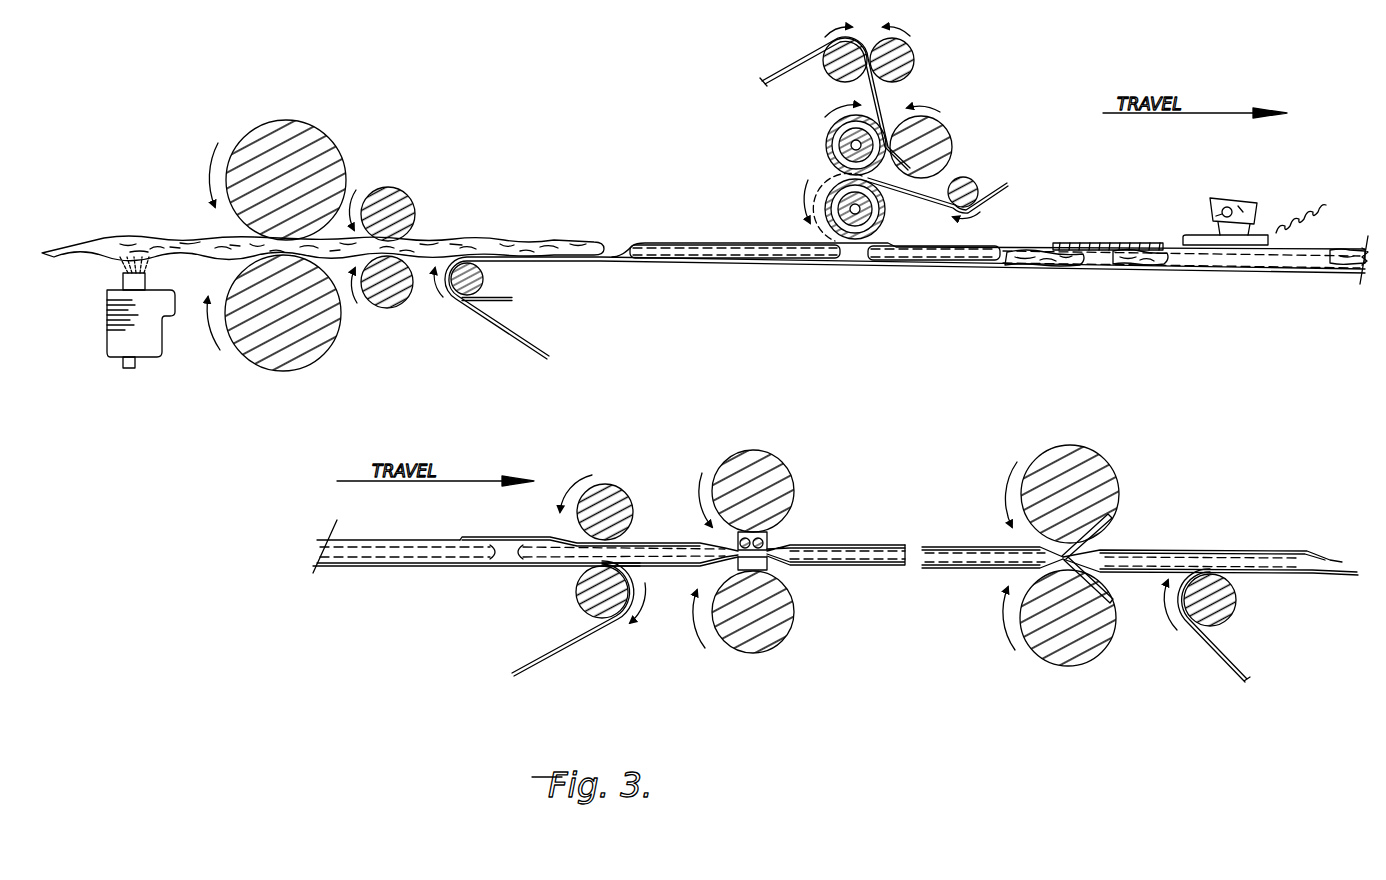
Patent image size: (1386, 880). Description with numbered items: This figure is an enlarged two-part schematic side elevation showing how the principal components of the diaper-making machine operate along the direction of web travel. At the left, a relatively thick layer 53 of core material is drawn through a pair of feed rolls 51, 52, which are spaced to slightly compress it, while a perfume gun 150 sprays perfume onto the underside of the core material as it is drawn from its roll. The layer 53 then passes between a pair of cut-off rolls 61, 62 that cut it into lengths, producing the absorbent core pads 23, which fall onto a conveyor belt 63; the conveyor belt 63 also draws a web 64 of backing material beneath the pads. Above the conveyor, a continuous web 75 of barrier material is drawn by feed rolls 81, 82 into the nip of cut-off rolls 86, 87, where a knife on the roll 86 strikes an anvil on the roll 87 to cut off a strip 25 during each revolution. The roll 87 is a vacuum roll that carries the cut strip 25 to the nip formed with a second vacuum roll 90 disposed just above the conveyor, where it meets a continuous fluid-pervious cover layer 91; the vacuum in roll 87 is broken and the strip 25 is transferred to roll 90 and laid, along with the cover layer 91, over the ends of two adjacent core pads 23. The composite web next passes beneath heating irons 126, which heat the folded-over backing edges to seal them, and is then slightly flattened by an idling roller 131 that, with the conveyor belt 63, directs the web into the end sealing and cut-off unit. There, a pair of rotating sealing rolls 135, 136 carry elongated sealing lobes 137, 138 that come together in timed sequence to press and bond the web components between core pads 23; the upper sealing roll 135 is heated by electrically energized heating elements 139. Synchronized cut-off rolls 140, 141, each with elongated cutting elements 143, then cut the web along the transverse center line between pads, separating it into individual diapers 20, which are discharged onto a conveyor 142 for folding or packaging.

The diaper 20 is at (1262, 540).
The core 23 is at (548, 248).
The plastic strip 25 is at (817, 227).
The feed roll 51 is at (307, 133).
The feed roll 52 is at (290, 370).
The layer of core material 53 is at (140, 238).
The cut-off roll 61 is at (397, 200).
The cut-off roll 62 is at (377, 307).
The conveyor belt 63 is at (620, 263).
The web of backing material 64 is at (520, 345).
The web 75 is at (773, 73).
The feed roll 81 is at (840, 70).
The feed roll 82 is at (918, 57).
The cut-off roll 86 is at (943, 137).
The cut-off roll 87 is at (827, 140).
The vacuum roll 90 is at (878, 217).
The cover layer 91 is at (997, 197).
The heating iron 126 is at (1185, 237).
The idling roller 131 is at (607, 493).
The upper sealing roll 135 is at (770, 463).
The sealing roll 136 is at (767, 648).
The sealing lobe 137 is at (738, 538).
The sealing lobe 138 is at (763, 563).
The heating elements 139 is at (767, 538).
The cut-off roll 140 is at (1100, 473).
The cut-off roll 141 is at (1057, 660).
The conveyor 142 is at (1232, 658).
The cutting elements 143 is at (1097, 540).
The perfume gun 150 is at (153, 353).